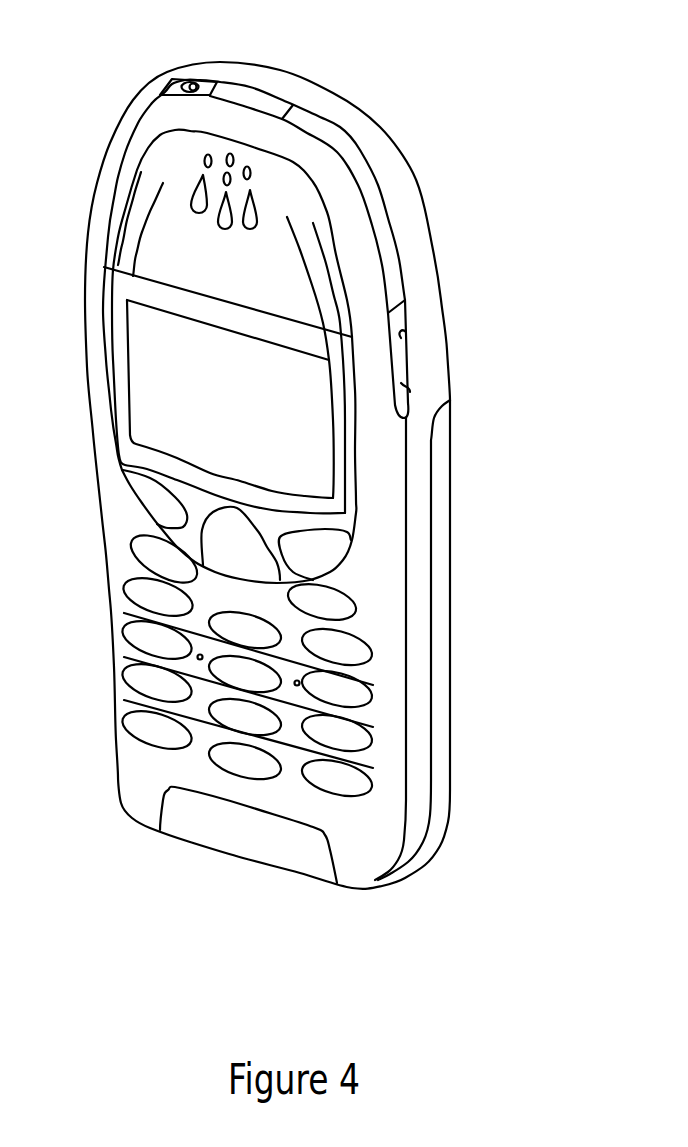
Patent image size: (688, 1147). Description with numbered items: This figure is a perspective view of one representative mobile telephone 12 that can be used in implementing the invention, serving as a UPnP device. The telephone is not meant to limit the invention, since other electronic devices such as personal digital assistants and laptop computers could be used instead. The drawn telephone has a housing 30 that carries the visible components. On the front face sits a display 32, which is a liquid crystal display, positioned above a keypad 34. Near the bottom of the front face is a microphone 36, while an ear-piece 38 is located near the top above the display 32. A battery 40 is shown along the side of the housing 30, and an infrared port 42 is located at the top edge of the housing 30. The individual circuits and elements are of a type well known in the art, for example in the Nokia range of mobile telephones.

The mobile telephone 12 is at (383, 72).
The housing 30 is at (413, 228).
The display 32 is at (310, 443).
The keypad 34 is at (337, 783).
The microphone 36 is at (187, 825).
The ear-piece 38 is at (200, 187).
The battery 40 is at (442, 765).
The infrared port 42 is at (250, 96).